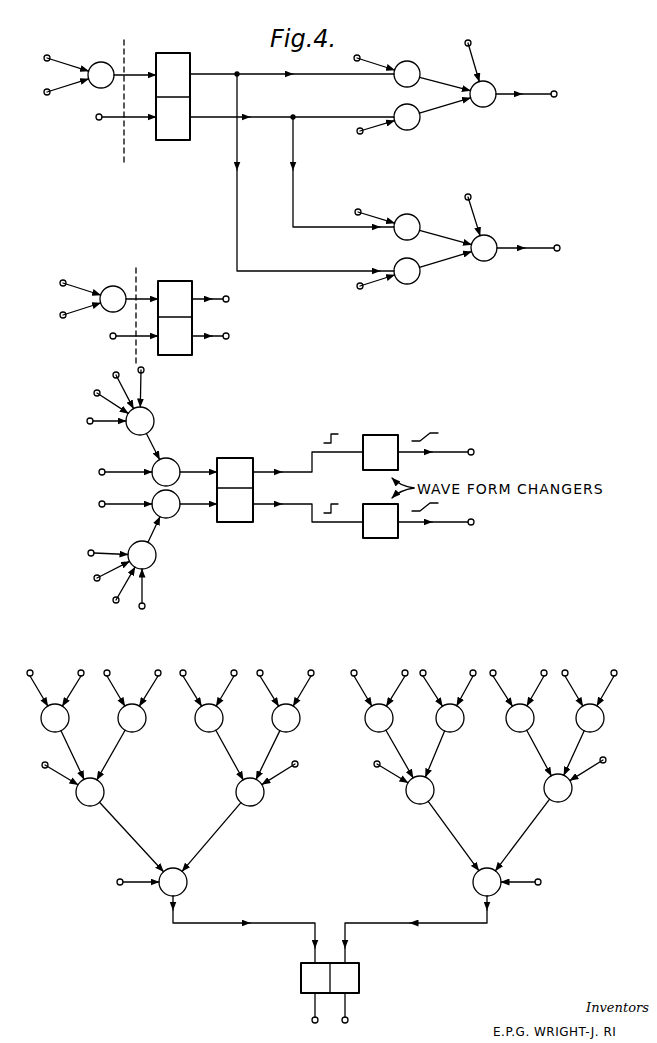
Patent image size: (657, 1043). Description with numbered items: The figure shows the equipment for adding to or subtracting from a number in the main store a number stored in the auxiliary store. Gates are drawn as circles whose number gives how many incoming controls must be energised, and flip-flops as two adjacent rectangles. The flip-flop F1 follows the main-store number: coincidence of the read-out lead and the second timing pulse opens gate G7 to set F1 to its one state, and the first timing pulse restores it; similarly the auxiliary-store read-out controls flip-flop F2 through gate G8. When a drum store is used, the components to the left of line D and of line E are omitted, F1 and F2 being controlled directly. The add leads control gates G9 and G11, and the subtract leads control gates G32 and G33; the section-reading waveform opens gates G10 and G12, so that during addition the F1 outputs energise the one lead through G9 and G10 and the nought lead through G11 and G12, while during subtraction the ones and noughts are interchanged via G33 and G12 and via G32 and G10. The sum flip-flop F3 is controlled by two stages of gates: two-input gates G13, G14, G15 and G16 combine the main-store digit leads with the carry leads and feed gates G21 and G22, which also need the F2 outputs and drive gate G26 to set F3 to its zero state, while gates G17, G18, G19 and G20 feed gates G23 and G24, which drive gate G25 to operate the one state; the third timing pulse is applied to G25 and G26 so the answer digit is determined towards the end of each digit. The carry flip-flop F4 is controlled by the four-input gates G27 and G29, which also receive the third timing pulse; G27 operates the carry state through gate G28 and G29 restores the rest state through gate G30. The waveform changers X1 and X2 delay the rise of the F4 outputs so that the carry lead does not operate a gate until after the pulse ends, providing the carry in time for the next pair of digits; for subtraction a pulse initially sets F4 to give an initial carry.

The gate G7 is at (72, 68).
The gate G8 is at (83, 292).
The gate G9 is at (386, 60).
The gate G10 is at (501, 71).
The gate G11 is at (387, 214).
The gate G12 is at (493, 225).
The gate G13 is at (58, 695).
The gate G14 is at (136, 695).
The gate G15 is at (213, 695).
The gate G16 is at (290, 695).
The gate G17 is at (385, 695).
The gate G18 is at (454, 695).
The gate G19 is at (524, 695).
The gate G20 is at (594, 695).
The gate G21 is at (83, 768).
The gate G22 is at (274, 768).
The gate G23 is at (390, 767).
The gate G24 is at (560, 767).
The gate G25 is at (493, 847).
The gate G26 is at (170, 849).
The gate G27 is at (129, 396).
The gate G28 is at (138, 460).
The gate G29 is at (140, 579).
The gate G30 is at (140, 516).
The gate G32 is at (381, 128).
The gate G33 is at (381, 282).
The bistable circuit F1 is at (134, 85).
The bistable circuit F2 is at (175, 306).
The bistable circuit F3 is at (330, 963).
The carry flip-flop F4 is at (216, 479).
The waveform changer X1 is at (437, 441).
The waveform changer X2 is at (437, 535).
The line D— D is at (124, 100).
The line E— E is at (136, 309).